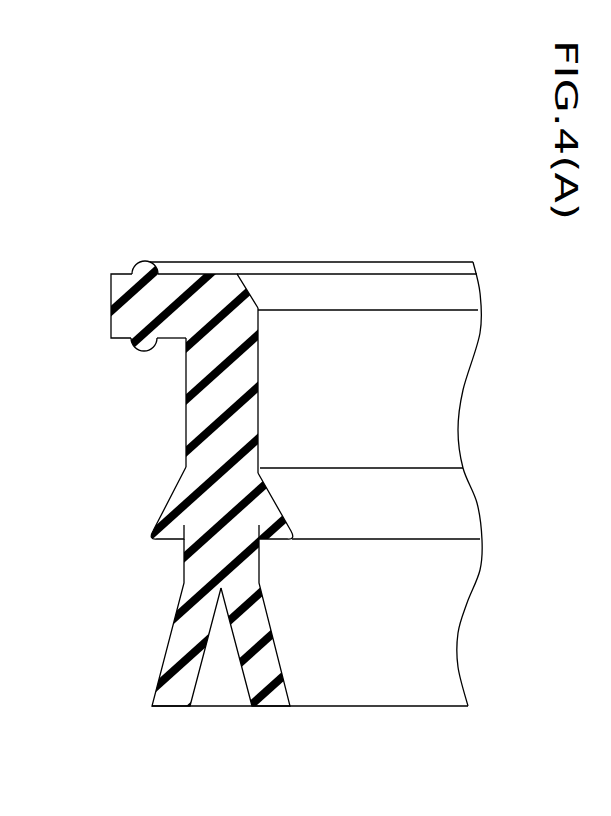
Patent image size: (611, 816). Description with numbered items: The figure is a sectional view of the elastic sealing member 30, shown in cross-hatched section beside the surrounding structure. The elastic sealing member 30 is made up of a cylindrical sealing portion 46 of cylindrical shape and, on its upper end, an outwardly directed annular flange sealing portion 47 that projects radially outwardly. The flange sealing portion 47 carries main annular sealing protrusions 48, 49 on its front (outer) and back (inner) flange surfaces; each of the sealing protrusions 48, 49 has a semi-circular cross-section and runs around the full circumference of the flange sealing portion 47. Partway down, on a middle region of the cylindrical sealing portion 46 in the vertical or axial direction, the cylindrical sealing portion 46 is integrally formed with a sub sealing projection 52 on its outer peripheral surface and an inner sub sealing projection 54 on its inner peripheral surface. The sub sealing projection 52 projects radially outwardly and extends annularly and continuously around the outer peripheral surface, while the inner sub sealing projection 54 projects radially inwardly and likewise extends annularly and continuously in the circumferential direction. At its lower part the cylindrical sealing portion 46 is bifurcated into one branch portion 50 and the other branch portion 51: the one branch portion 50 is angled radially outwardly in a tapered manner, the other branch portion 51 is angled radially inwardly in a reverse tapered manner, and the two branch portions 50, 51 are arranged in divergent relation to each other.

The elastic sealing member 30 is at (384, 221).
The cylindrical sealing portion 46 is at (249, 408).
The flange sealing portion 47 is at (214, 290).
The main annular sealing protrusion 48 is at (143, 262).
The main annular sealing protrusion 49 is at (143, 352).
The one branch portion 50 is at (178, 640).
The other branch portion 51 is at (258, 622).
The sub sealing projection 52 is at (168, 515).
The inner sub sealing projection 54 is at (270, 497).